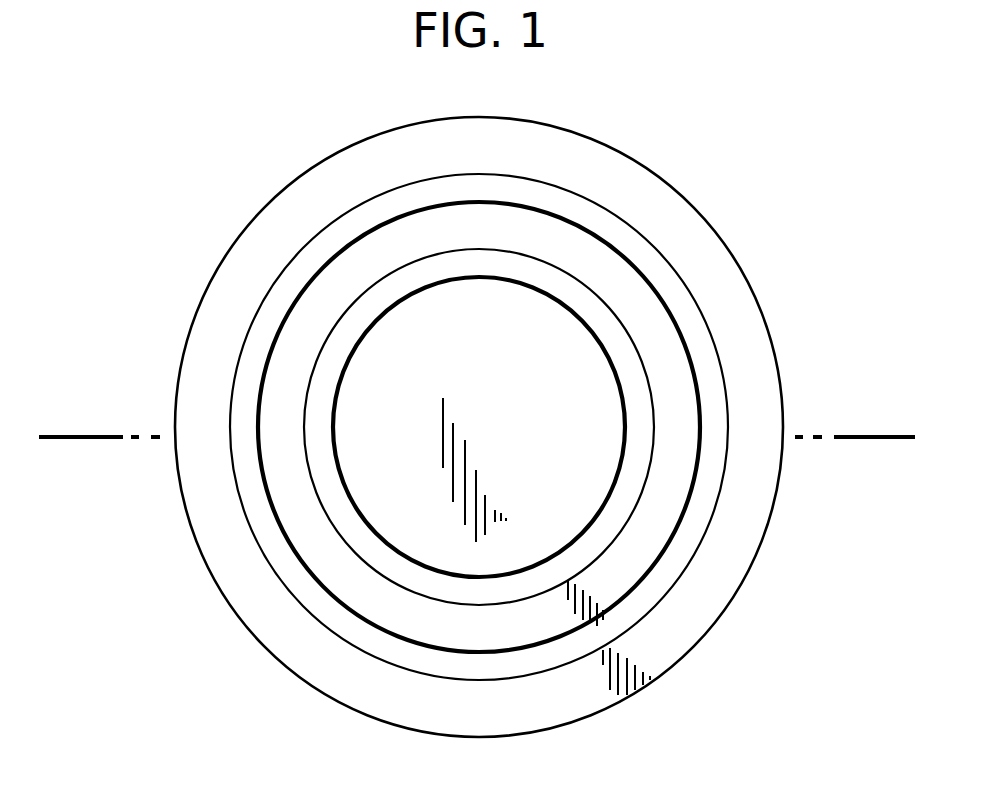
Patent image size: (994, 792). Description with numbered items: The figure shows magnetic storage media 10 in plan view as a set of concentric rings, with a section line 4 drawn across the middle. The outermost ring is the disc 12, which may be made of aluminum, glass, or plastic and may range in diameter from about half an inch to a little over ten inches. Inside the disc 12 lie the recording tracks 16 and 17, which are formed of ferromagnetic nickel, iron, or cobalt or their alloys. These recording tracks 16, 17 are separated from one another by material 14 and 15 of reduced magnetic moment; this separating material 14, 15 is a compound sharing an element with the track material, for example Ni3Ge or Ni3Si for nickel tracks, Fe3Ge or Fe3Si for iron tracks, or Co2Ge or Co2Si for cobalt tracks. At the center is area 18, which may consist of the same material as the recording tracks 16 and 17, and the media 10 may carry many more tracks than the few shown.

The magnetic storage media 10 is at (226, 165).
The disc 12 is at (757, 297).
The material of reduced magnetic moment 14 is at (724, 377).
The material of reduced magnetic moment 15 is at (625, 533).
The recording track 16 is at (232, 560).
The recording track 17 is at (284, 378).
The area 18 is at (410, 380).
The section line 4- 4 is at (67, 452).